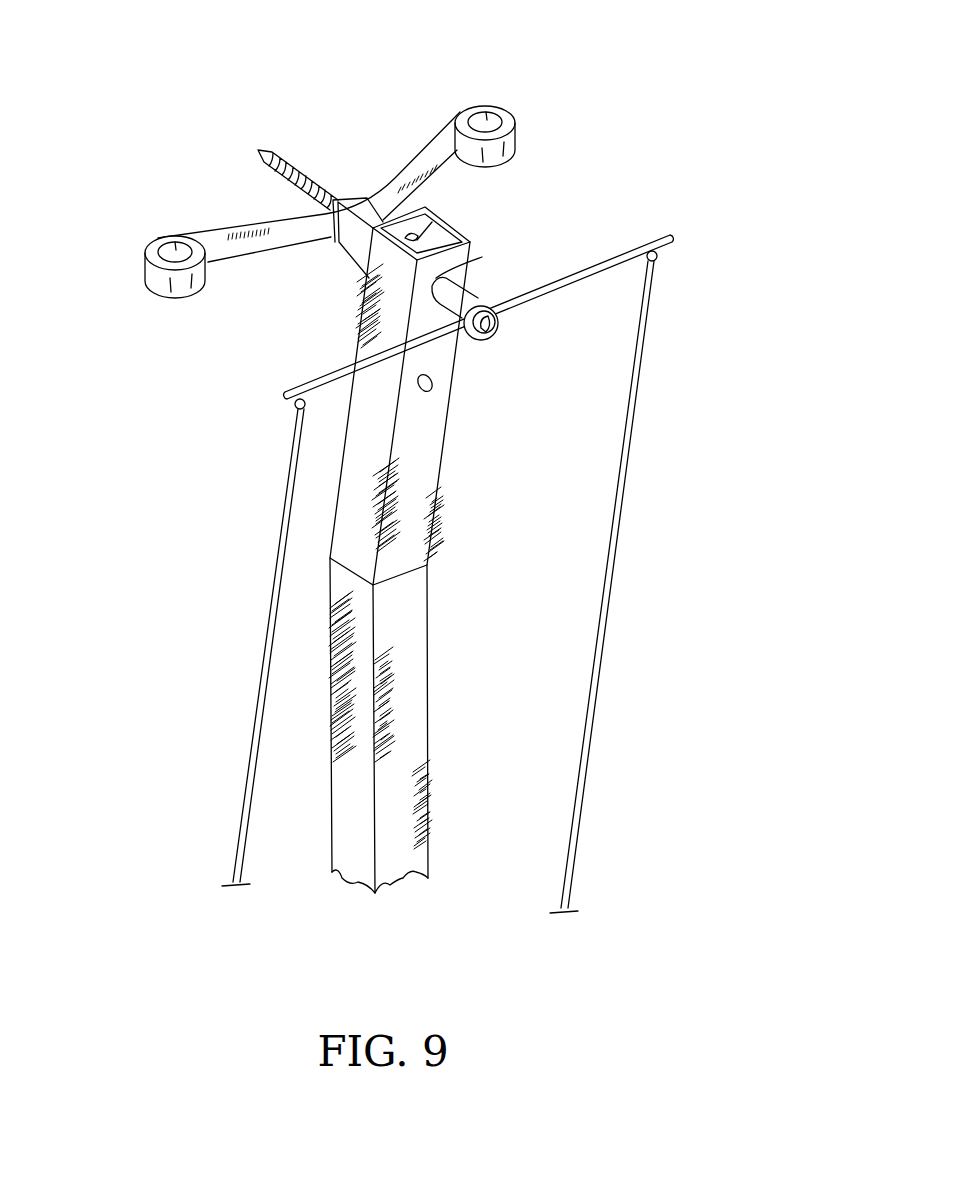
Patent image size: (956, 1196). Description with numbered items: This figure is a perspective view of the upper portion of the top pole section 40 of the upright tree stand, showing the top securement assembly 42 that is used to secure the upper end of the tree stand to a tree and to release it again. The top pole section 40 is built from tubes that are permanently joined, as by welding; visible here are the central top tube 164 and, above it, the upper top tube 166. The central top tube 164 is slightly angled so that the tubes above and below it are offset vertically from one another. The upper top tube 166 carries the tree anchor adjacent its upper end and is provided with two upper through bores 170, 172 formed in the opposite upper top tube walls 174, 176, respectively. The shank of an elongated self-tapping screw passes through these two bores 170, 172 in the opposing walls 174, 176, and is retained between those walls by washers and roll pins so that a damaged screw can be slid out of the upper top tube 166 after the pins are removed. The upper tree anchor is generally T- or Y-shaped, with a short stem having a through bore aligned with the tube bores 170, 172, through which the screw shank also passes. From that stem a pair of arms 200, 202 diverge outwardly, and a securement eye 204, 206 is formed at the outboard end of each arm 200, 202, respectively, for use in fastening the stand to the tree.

The top pole section 40 is at (540, 598).
The top securement assembly 42 is at (628, 97).
The central top tube 164 is at (437, 725).
The upper top tube 166 is at (452, 464).
The upper through bore 170 is at (458, 272).
The upper through bore 172 is at (452, 236).
The upper top tube wall 174 is at (421, 267).
The upper top tube wall 176 is at (406, 213).
The arm 200 is at (388, 170).
The arm 202 is at (214, 236).
The securement eye 204 is at (502, 110).
The securement eye 206 is at (150, 273).